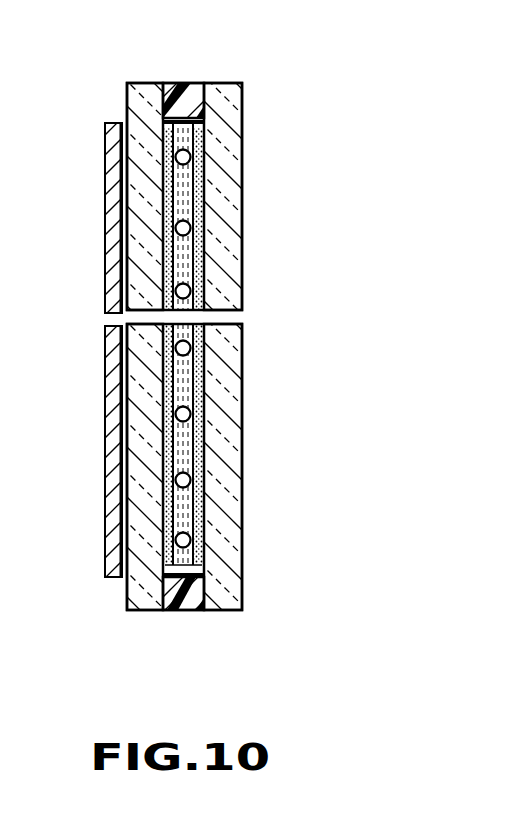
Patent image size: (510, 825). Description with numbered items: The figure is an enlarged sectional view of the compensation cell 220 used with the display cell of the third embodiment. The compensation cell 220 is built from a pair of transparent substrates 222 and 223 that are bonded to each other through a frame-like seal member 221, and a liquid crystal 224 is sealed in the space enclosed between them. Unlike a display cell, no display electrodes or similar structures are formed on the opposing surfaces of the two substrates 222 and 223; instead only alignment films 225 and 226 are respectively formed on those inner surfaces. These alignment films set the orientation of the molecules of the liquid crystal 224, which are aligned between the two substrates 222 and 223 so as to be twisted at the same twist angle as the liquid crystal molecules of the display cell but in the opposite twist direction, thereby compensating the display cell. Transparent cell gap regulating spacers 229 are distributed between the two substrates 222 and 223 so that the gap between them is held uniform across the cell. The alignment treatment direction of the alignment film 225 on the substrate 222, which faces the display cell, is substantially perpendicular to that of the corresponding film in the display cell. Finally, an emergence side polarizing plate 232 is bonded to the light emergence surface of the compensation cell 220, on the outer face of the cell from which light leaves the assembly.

The compensation cell 220 is at (258, 575).
The frame-like seal member 221 is at (175, 85).
The transparent substrate 222 is at (240, 98).
The transparent substrate 223 is at (127, 90).
The liquid crystal 224 is at (188, 245).
The alignment film 225 is at (203, 352).
The alignment film 226 is at (167, 458).
The cell gap regulating spacers 229 is at (175, 226).
The emergence side polarizing plate 232 is at (112, 372).